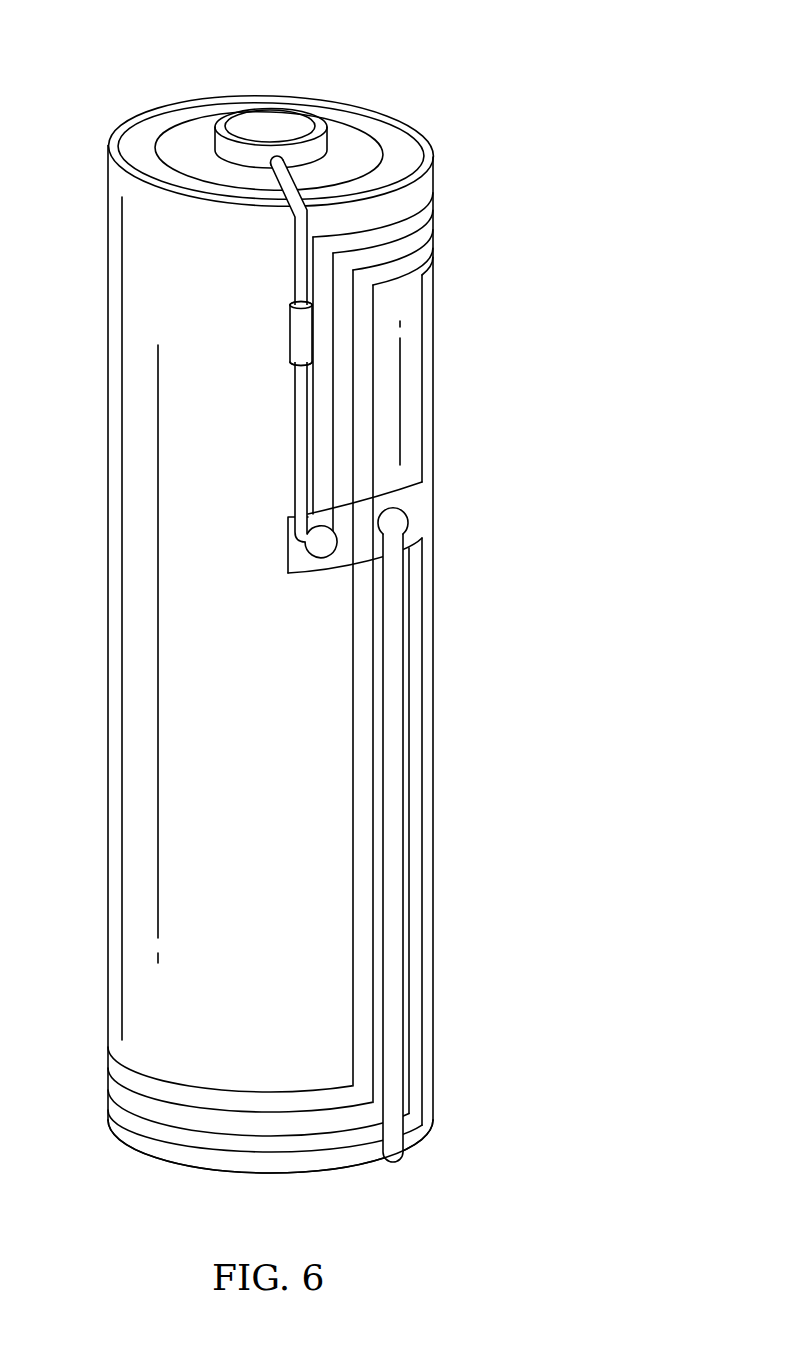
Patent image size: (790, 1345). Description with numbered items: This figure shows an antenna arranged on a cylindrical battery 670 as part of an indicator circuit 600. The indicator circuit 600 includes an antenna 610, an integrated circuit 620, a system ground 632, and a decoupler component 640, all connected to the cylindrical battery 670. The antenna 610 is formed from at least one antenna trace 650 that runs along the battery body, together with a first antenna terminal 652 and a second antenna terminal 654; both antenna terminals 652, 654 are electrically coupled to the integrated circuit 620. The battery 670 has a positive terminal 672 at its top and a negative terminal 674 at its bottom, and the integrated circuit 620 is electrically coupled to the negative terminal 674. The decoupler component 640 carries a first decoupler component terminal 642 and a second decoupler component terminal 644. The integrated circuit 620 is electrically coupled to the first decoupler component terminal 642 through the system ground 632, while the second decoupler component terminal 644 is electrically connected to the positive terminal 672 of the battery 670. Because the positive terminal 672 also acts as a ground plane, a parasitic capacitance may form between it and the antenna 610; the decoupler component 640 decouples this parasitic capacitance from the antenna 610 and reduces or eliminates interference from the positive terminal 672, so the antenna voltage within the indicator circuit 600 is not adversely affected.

The indicator circuit 600 is at (573, 486).
The antenna 610 is at (505, 212).
The integrated circuit 620 is at (416, 494).
The system ground 632 is at (295, 470).
The decoupler component 640 is at (290, 335).
The first decoupler component terminal 642 is at (291, 363).
The second decoupler component terminal 644 is at (291, 304).
The antenna trace 650 is at (413, 262).
The first antenna terminal 652 is at (312, 548).
The second antenna terminal 654 is at (406, 521).
The cylindrical battery 670 is at (121, 65).
The positive terminal 672 is at (352, 130).
The negative terminal 674 is at (328, 1171).